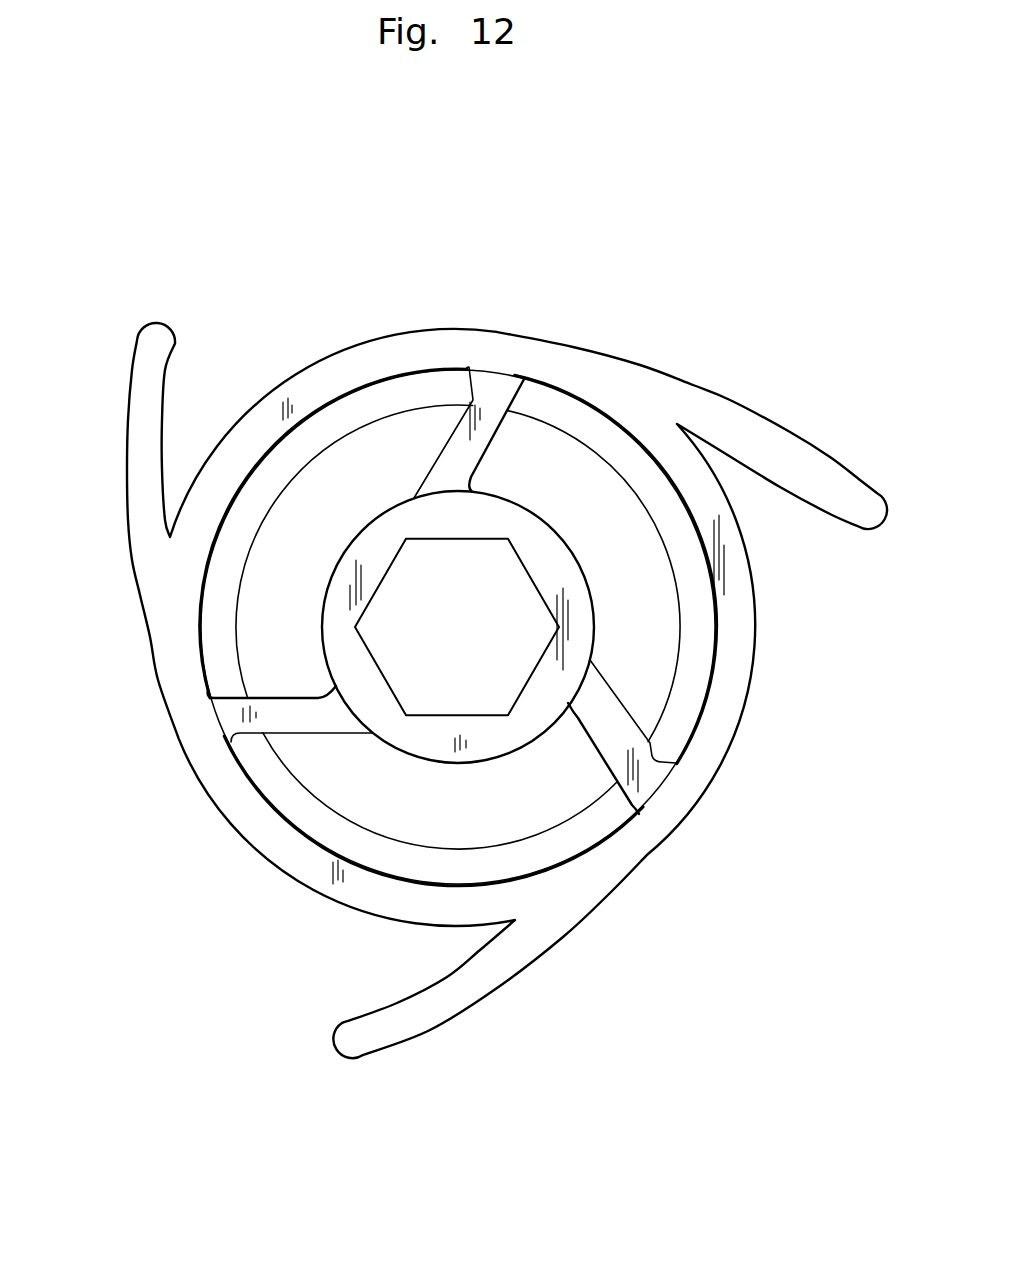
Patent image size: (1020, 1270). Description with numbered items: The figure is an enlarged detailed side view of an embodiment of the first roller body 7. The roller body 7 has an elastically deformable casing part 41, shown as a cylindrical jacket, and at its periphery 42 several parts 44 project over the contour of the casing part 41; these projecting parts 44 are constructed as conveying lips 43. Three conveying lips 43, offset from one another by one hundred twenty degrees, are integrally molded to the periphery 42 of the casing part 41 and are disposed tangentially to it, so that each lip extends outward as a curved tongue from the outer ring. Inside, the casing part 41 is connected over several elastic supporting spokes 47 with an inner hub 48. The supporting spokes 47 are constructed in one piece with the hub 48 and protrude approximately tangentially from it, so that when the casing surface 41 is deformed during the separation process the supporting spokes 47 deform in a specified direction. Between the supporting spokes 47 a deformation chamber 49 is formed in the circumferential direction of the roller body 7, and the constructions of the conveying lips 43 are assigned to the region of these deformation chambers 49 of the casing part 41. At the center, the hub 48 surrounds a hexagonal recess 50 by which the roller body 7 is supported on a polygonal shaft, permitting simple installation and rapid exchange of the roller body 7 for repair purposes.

The first roller body 7 is at (550, 189).
The casing part 41 is at (313, 388).
The periphery 42 is at (392, 327).
The conveying lip 43 is at (152, 333).
The projecting part 44 is at (129, 371).
The supporting spoke 47 is at (468, 443).
The inner hub 48 is at (543, 559).
The deformation chamber 49 is at (326, 539).
The hexagonal recess 50 is at (389, 690).